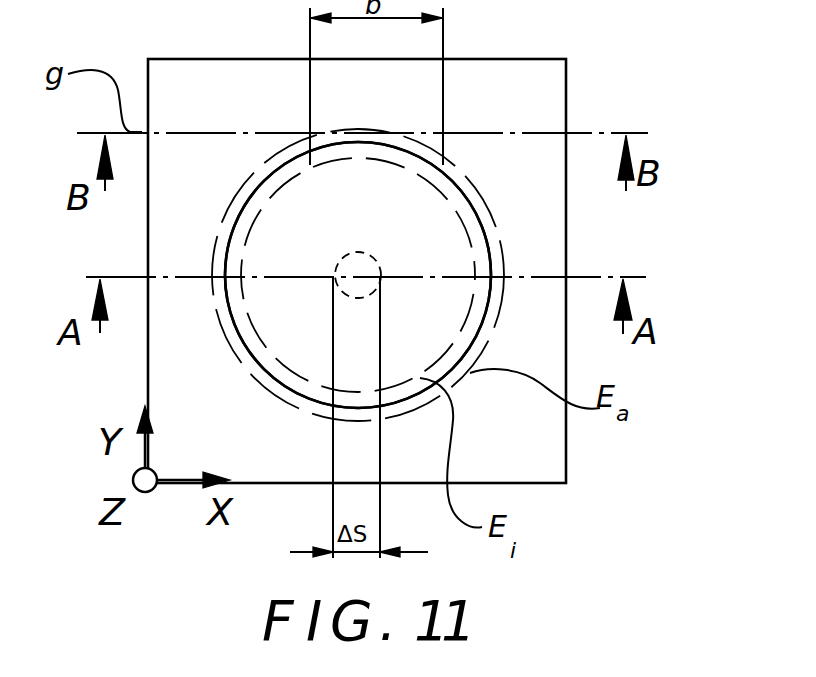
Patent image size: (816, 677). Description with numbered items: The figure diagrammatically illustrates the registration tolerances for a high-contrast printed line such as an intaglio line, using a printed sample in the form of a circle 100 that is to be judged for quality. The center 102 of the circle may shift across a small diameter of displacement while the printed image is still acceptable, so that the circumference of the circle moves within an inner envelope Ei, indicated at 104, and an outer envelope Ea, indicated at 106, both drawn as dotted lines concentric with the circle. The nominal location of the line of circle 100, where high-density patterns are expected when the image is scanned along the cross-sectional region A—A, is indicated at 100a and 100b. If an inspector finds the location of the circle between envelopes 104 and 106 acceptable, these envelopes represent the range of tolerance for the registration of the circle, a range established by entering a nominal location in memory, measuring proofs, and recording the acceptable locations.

The circle 100 is at (396, 145).
The nominal circle line location 100a is at (227, 275).
The nominal circle line location 100b is at (492, 280).
The center of the circle 102 is at (358, 272).
The inner envelope 104 is at (473, 258).
The outer envelope 106 is at (505, 236).